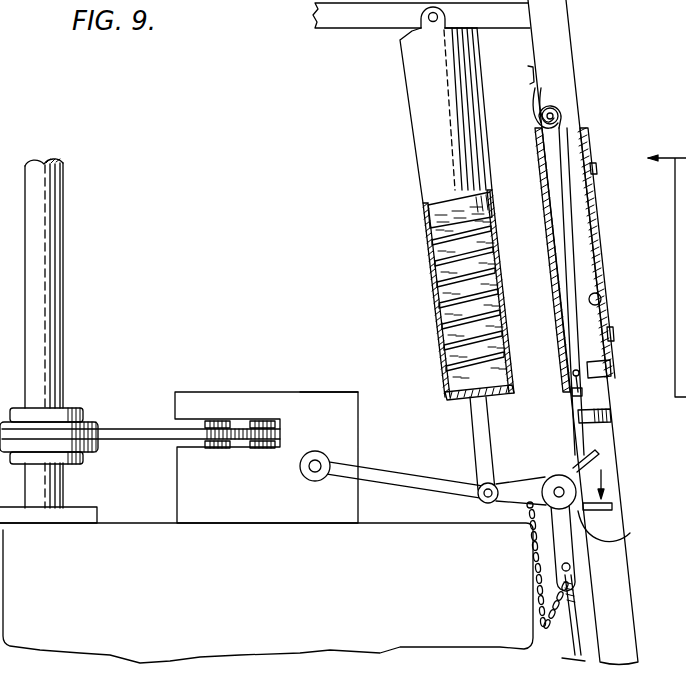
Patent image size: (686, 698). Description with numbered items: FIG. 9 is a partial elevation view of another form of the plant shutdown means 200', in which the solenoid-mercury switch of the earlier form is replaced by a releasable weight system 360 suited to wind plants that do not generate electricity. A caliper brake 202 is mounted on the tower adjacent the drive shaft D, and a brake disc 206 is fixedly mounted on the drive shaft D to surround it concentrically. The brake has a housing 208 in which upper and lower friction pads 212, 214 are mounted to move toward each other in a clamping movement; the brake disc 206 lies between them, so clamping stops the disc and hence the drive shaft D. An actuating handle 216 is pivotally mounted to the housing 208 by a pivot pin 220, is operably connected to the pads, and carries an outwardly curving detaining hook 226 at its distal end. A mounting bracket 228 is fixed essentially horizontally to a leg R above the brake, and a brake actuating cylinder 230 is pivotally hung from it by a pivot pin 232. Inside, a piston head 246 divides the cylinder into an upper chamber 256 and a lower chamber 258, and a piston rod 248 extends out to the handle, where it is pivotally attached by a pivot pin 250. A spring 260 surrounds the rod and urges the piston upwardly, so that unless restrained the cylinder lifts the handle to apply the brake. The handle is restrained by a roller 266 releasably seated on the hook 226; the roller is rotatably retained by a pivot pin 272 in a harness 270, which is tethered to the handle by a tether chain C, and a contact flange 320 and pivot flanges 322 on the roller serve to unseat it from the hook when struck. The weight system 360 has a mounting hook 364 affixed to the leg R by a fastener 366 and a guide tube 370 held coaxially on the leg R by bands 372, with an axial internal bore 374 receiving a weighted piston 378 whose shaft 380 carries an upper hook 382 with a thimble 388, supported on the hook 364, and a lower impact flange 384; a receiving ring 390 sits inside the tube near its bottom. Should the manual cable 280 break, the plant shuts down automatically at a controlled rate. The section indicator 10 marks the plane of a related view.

The shutdown means 200' is at (230, 266).
The caliper brake 202 is at (283, 384).
The brake disc 206 is at (122, 430).
The housing 208 is at (305, 398).
The upper friction pads 212 is at (213, 420).
The lower friction pads 214 is at (218, 449).
The actuating handle 216 is at (408, 482).
The pivot pin 220 is at (316, 472).
The detaining hook 226 is at (614, 537).
The mounting bracket 228 is at (357, 24).
The brake actuating cylinder 230 is at (400, 167).
The pivot pin 232 is at (433, 24).
The piston head 246 is at (423, 226).
The piston rod 248 is at (489, 428).
The pivot pin 250 is at (486, 502).
The upper chamber 256 is at (422, 212).
The lower chamber 258 is at (445, 364).
The spring 260 is at (437, 303).
The roller 266 is at (553, 478).
The harness 270 is at (562, 550).
The pivot pin 272 is at (528, 508).
The cable 280 is at (573, 643).
The contact flange 320 is at (602, 471).
The pivot flanges 322 is at (613, 506).
The releasable weight system 360 is at (609, 246).
The mounting hook 364 is at (527, 108).
The fastener 366 is at (524, 75).
The guide tube 370 is at (596, 205).
The bands 372 is at (594, 168).
The axial internal bore 374 is at (602, 303).
The weighted piston 378 is at (593, 371).
The shaft 380 is at (573, 253).
The hook 382 is at (562, 116).
The impact flange 384 is at (612, 416).
The thimble 388 is at (548, 106).
The receiving ring 390 is at (574, 380).
The drive shaft D is at (66, 337).
The tether chain C is at (538, 634).
The leg R is at (637, 640).
The section line 10 is at (667, 264).